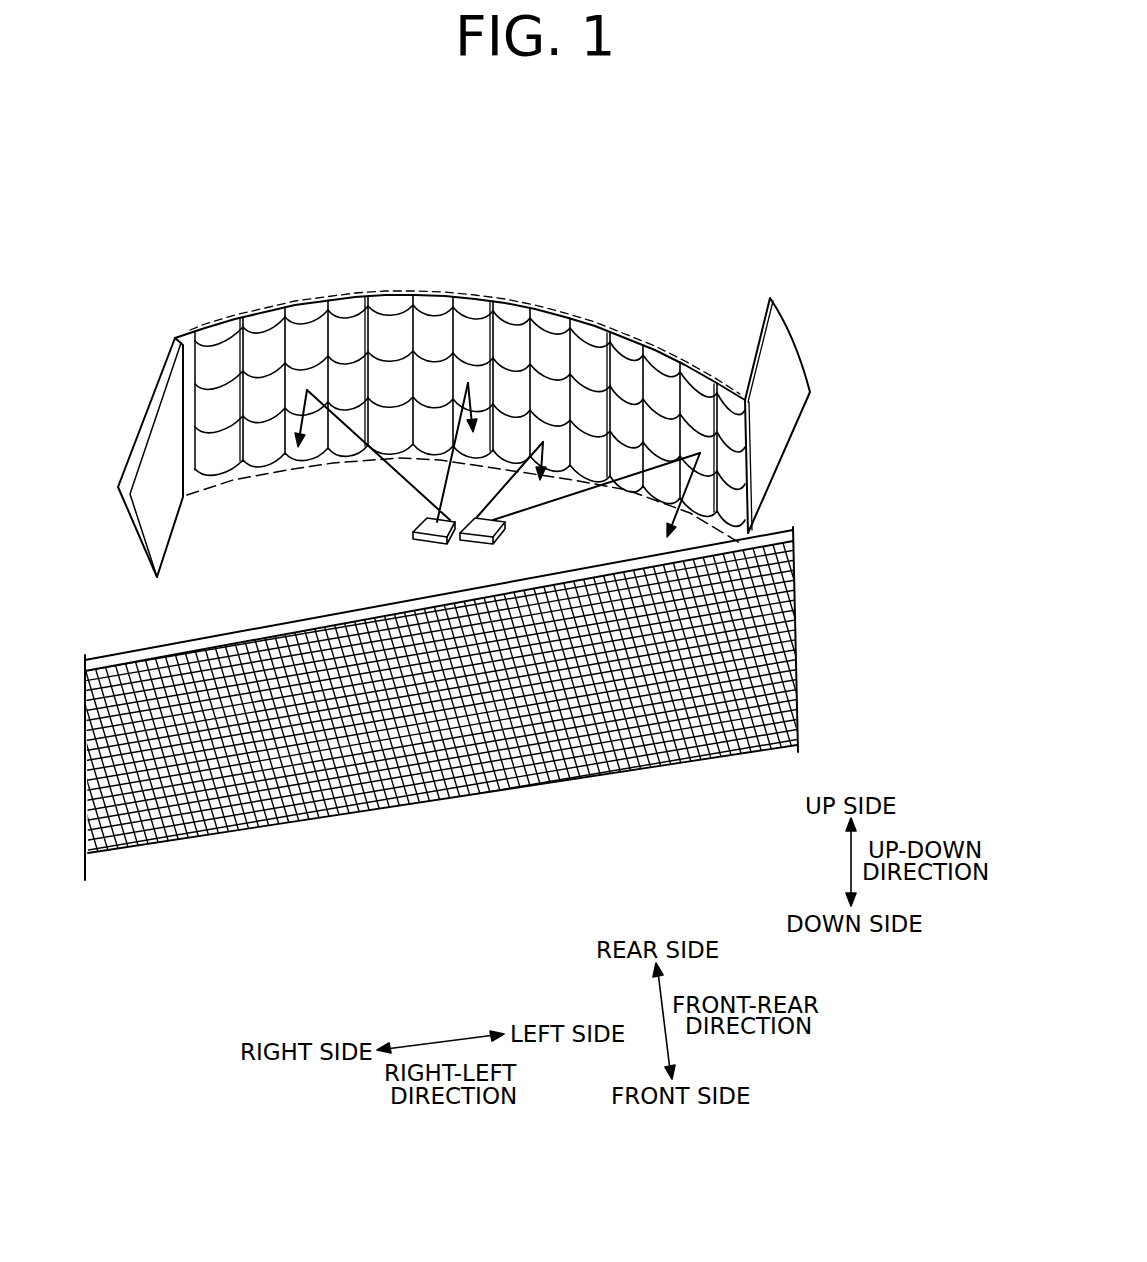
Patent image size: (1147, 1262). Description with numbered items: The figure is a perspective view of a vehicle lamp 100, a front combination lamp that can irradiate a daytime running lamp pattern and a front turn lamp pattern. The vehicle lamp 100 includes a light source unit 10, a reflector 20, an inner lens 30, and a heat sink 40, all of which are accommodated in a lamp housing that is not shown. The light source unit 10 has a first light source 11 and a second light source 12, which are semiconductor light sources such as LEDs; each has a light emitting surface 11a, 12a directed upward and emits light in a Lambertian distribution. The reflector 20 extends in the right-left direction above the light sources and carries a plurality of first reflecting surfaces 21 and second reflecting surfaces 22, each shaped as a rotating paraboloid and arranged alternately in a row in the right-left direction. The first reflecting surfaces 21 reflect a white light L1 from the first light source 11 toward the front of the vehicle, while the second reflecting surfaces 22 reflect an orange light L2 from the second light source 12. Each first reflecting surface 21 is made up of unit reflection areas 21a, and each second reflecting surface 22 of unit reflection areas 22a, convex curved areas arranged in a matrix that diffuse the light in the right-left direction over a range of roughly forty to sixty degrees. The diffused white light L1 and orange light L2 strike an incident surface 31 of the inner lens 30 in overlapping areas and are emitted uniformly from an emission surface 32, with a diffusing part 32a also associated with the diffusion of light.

The vehicle lamp 100 is at (716, 184).
The light source unit 10 is at (404, 555).
The first light source 11 is at (474, 540).
The light emitting surface 11a is at (516, 526).
The second light source 12 is at (425, 545).
The light emitting surface 12a is at (411, 523).
The reflector 20 is at (160, 347).
The first reflecting surface 21 is at (279, 297).
The unit reflection area 21a is at (263, 342).
The second reflecting surface 22 is at (393, 295).
The unit reflection area 22a is at (463, 322).
The inner lens 30 is at (98, 662).
The incident surface 31 is at (133, 655).
The emission surface 32 is at (150, 852).
The diffusing part 32a is at (213, 848).
The heat sink 40 is at (266, 568).
The white light L1 is at (395, 470).
The orange light L2 is at (440, 480).